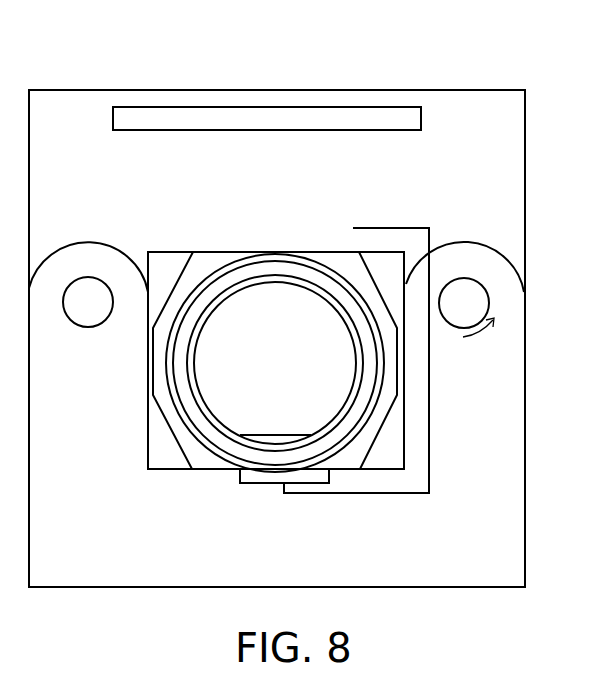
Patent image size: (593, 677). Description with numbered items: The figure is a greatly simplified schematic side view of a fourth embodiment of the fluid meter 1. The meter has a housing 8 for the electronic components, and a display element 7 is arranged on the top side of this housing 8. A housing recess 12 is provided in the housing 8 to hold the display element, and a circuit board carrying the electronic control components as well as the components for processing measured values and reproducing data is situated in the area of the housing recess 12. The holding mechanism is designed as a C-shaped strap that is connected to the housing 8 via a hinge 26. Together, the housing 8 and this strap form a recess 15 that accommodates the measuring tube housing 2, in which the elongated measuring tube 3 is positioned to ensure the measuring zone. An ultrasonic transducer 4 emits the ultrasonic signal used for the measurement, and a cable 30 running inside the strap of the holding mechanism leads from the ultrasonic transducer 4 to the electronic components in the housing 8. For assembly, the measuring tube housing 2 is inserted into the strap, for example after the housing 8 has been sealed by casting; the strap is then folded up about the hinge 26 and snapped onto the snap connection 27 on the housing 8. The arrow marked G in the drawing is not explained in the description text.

The fluid meter 1 is at (282, 40).
The measuring tube housing 2 is at (360, 430).
The measuring tube 3 is at (360, 369).
The ultrasonic transducer 4 is at (238, 484).
The display element 7 is at (402, 116).
The housing 8 is at (513, 158).
The housing recess 12 is at (148, 423).
The recess 15 is at (167, 262).
The hinge 26 is at (478, 298).
The snap connection 27 is at (88, 316).
The cable 30 is at (429, 486).
The gravity direction G is at (510, 551).